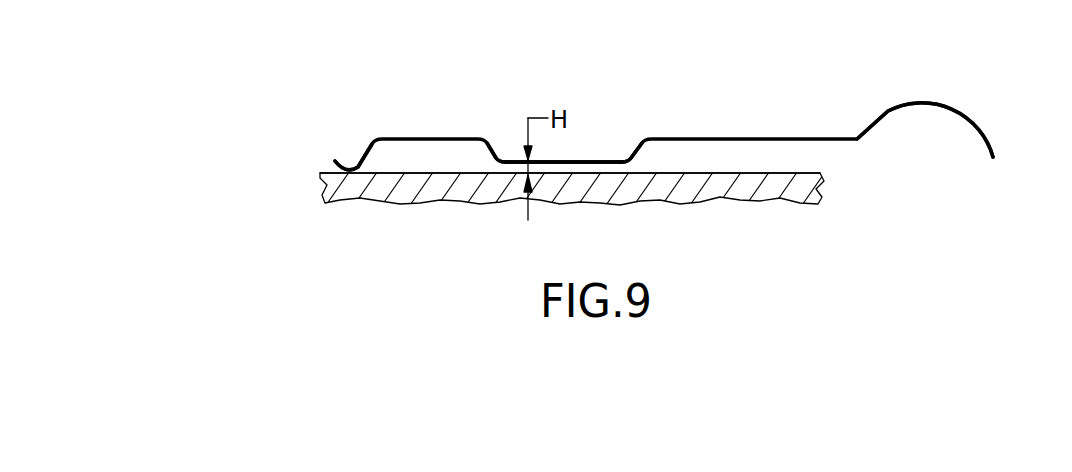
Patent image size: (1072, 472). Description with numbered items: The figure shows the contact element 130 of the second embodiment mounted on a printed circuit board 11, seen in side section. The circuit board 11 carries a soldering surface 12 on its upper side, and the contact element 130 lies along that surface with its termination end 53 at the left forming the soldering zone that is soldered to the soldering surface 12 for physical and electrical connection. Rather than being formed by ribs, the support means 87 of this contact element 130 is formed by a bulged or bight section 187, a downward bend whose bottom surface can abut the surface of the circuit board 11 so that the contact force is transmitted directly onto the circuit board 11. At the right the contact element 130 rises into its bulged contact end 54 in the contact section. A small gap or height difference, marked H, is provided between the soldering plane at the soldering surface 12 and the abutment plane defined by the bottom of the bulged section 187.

The printed circuit board 11 is at (767, 193).
The soldering surface 12 is at (333, 172).
The termination end 53 is at (362, 166).
The bulged contact end 54 is at (953, 108).
The support means 87 is at (588, 143).
The contact element 130 is at (722, 139).
The bulged or bight section 187 is at (602, 161).